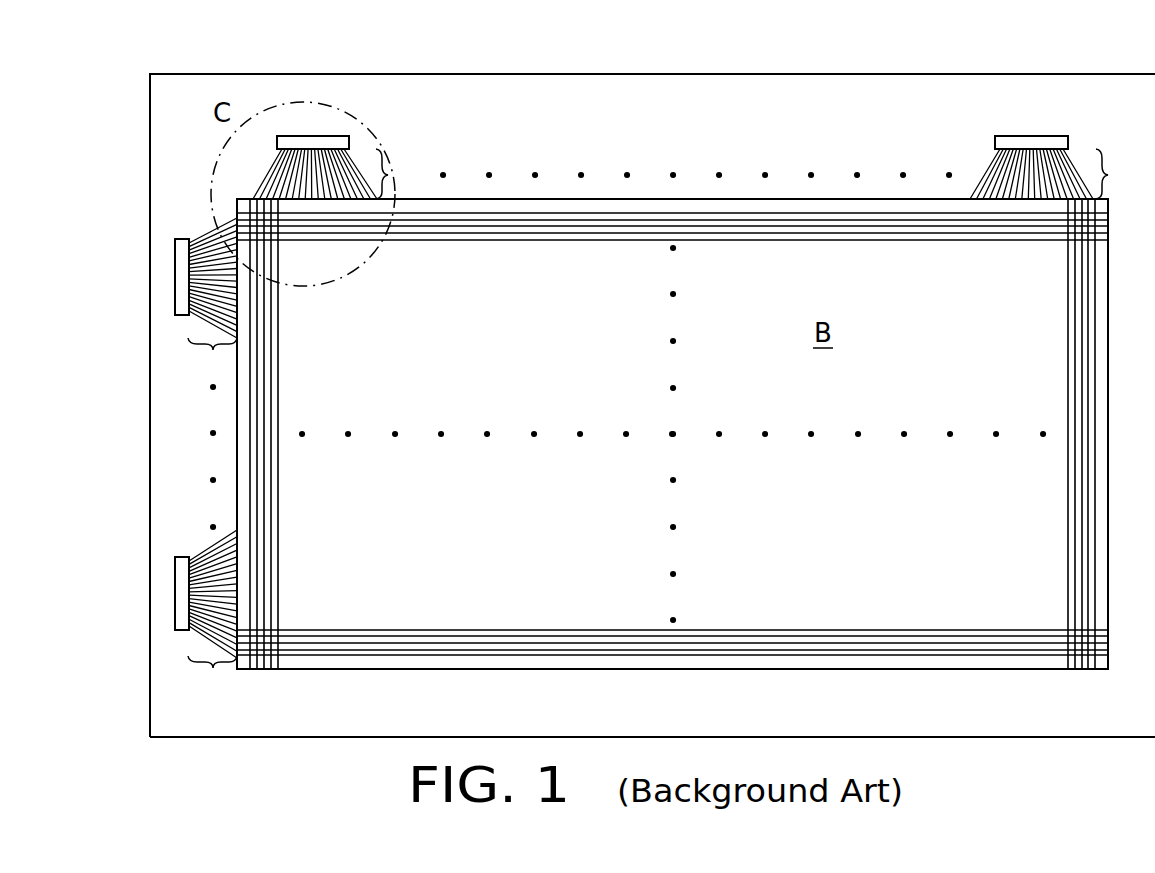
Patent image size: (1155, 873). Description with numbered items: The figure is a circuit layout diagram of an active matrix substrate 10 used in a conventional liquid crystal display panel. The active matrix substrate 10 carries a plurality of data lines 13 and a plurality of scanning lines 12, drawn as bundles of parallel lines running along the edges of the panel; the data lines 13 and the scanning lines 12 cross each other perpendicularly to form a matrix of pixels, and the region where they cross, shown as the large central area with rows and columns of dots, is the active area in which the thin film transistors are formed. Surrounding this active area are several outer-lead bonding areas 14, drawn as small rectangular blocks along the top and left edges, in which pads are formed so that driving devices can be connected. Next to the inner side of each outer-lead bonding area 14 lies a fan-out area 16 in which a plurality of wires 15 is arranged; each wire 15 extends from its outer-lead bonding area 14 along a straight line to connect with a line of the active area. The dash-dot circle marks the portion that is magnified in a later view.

The active matrix substrate 10 is at (626, 73).
The scanning lines 12 is at (735, 215).
The data lines 13 is at (257, 444).
The outer-lead bonding areas 14 is at (310, 143).
The wires 15 is at (365, 165).
The fan-out area 16 is at (666, 425).